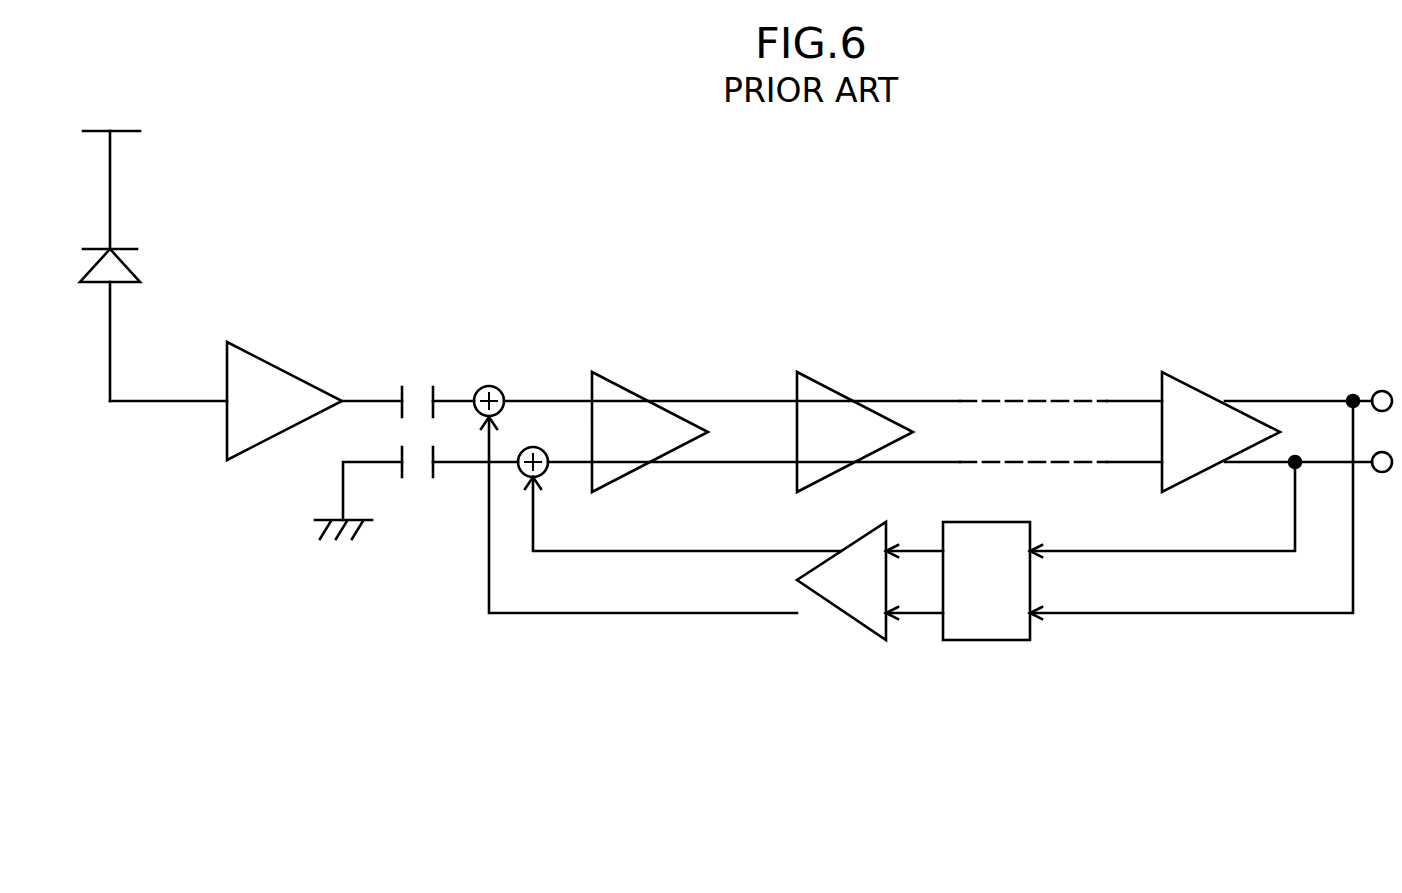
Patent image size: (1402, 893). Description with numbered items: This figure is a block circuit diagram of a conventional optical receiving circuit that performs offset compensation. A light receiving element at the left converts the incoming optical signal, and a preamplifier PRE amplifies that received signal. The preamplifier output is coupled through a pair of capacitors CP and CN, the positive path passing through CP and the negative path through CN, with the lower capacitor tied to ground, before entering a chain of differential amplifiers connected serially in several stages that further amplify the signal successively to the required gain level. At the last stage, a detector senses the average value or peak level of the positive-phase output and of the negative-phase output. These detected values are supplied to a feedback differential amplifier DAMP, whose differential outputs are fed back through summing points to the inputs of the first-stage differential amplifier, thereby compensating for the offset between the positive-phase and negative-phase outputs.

The preamplifier PRE is at (250, 375).
The coupling capacitor (positive) CP is at (423, 382).
The coupling capacitor (negative) CN is at (414, 477).
The feedback differential amplifier DAMP is at (863, 565).